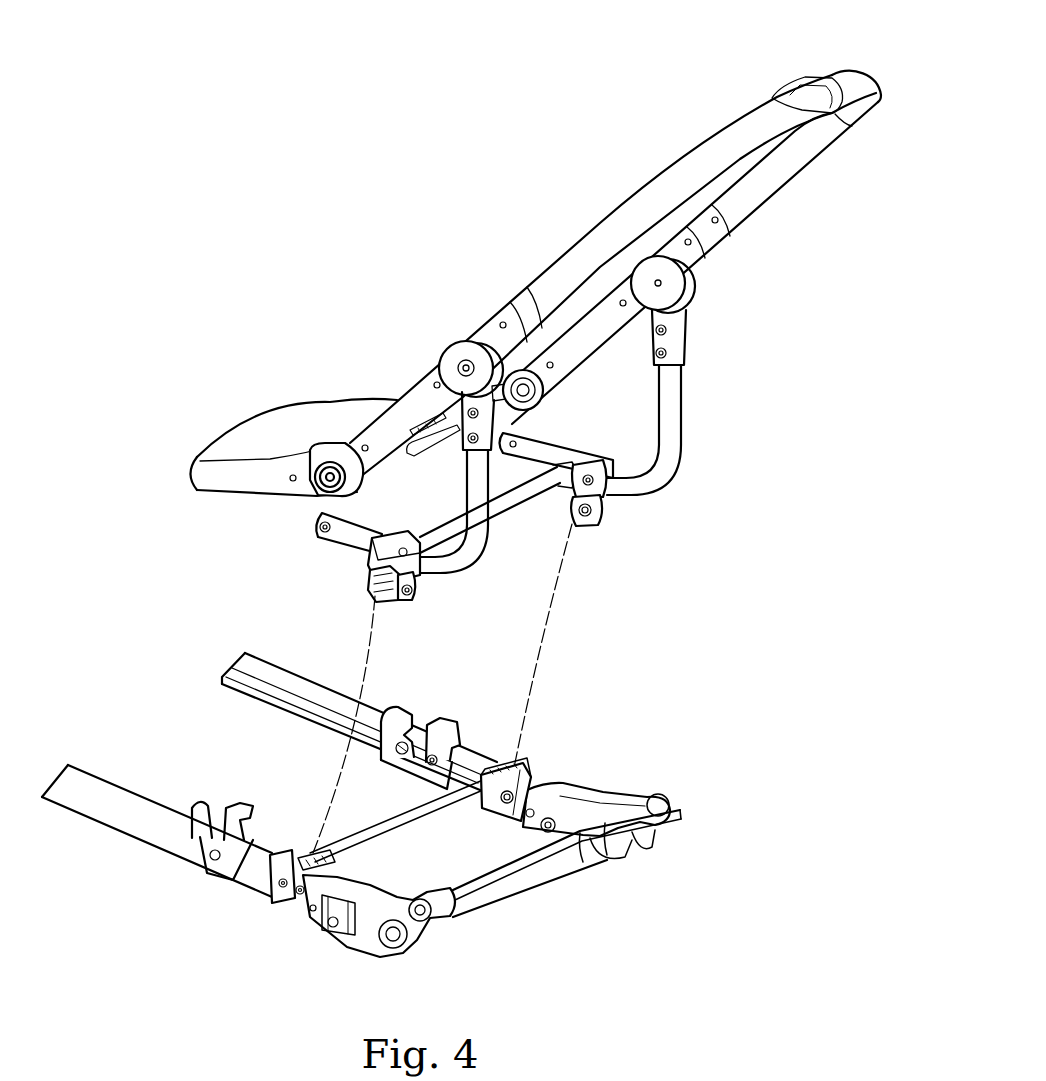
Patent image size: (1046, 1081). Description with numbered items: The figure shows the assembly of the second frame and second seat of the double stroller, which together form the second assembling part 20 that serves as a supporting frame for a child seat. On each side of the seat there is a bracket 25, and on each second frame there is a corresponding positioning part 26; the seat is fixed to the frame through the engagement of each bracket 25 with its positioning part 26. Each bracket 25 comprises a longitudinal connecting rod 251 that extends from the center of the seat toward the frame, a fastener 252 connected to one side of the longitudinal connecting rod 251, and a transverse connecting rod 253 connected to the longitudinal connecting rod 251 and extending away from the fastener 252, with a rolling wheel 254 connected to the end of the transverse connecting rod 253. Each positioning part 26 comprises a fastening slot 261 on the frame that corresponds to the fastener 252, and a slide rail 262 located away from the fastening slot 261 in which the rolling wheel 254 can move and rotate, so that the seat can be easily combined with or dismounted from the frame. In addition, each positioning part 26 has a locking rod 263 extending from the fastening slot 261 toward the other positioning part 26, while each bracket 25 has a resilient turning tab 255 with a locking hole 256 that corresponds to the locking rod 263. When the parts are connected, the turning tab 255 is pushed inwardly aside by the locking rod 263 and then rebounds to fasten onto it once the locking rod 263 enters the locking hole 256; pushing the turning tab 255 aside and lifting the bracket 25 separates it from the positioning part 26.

The second assembling part 20 is at (683, 148).
The bracket 25 is at (492, 571).
The longitudinal connecting rod 251 is at (473, 480).
The fastener 252 is at (368, 586).
The transverse connecting rod 253 is at (347, 538).
The rolling wheel 254 is at (313, 528).
The turning tab 255 is at (412, 600).
The locking hole 256 is at (605, 512).
The positioning part 26 is at (361, 821).
The fastening slot 261 is at (320, 850).
The slide rail 262 is at (248, 805).
The locking rod 263 is at (517, 785).